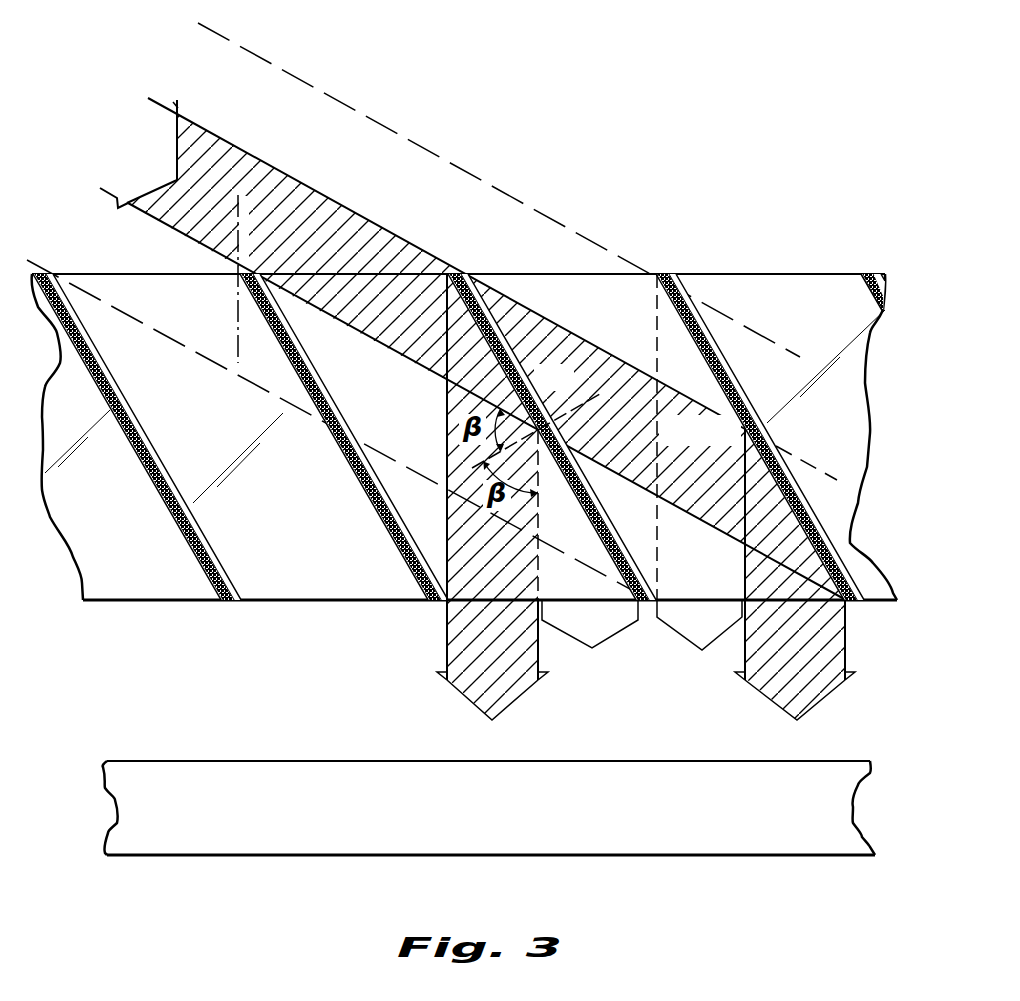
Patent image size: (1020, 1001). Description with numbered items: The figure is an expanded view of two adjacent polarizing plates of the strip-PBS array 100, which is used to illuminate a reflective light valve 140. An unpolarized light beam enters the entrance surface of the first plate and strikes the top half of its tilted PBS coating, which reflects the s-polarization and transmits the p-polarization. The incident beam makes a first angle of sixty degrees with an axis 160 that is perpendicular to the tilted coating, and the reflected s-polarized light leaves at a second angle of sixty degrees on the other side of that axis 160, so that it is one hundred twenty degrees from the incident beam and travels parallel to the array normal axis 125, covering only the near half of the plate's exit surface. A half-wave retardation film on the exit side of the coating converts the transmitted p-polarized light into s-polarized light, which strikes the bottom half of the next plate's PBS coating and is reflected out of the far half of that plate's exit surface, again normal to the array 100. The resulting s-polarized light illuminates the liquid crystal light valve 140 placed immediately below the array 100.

The strip-PBS array 100 is at (704, 195).
The array normal axis 125 is at (237, 338).
The liquid crystal light valve 140 is at (215, 790).
The axis 160 is at (595, 399).